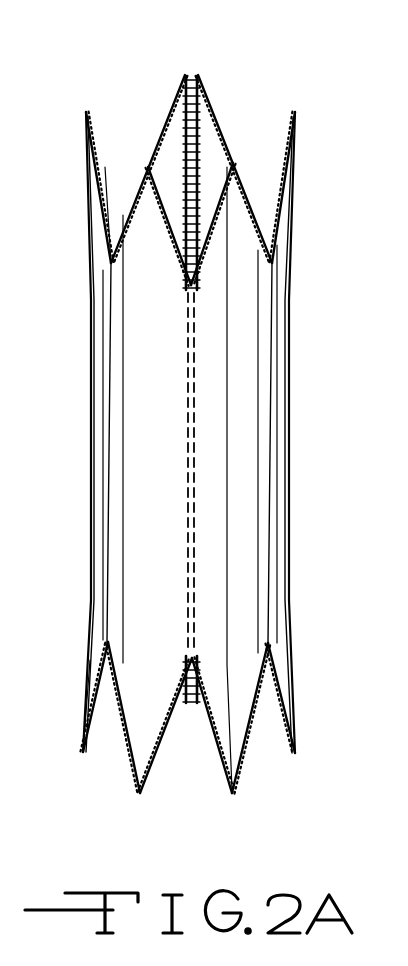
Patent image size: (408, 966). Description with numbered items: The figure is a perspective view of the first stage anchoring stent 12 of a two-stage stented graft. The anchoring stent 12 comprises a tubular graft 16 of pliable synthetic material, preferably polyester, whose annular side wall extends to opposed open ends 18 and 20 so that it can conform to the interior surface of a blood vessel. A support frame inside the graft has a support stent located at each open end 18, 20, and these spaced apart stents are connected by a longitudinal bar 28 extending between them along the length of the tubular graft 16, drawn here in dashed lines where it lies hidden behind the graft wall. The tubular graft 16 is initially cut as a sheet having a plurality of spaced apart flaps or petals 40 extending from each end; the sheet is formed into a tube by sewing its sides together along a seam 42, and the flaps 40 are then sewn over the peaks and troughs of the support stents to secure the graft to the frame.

The first stage anchoring stent 12 is at (290, 273).
The tubular graft 16 is at (238, 437).
The open end 18 is at (255, 160).
The open end 20 is at (265, 700).
The longitudinal bar 28 is at (198, 393).
The flaps 40 is at (105, 167).
The seam 42 is at (198, 148).